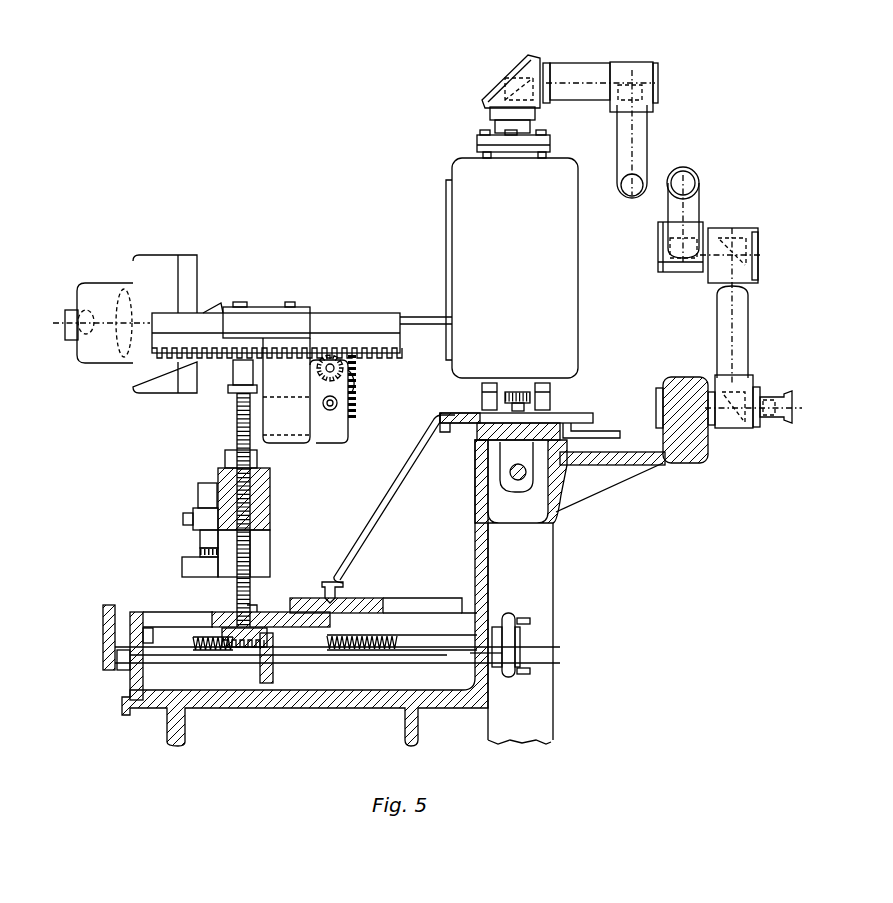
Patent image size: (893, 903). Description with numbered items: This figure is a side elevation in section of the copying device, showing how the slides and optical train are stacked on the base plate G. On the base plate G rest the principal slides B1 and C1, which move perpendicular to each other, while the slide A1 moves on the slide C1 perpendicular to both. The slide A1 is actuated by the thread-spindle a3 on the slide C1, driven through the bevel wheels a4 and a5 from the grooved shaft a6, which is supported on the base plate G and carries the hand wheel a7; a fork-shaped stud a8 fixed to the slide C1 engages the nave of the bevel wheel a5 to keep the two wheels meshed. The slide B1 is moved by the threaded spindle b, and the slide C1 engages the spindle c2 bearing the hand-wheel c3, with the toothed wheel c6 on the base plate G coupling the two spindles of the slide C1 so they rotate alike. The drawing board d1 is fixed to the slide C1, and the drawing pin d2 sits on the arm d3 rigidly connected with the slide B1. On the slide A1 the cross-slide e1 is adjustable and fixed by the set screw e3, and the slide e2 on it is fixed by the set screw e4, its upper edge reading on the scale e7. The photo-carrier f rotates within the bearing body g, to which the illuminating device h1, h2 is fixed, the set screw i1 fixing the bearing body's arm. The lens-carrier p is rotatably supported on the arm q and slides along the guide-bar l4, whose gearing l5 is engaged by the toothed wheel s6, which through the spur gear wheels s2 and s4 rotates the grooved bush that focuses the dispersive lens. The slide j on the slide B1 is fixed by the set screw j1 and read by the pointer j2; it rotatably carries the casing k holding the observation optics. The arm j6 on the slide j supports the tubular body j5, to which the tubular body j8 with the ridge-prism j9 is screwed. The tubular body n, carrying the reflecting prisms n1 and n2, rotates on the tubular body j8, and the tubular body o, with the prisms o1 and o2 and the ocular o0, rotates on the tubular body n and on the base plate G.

The casing k is at (512, 268).
The ridge-prism j9 is at (502, 88).
The tubular body j8 is at (558, 70).
The tubular body j5 is at (500, 126).
The arm j6 is at (550, 143).
The slide j is at (582, 414).
The set screw j1 is at (480, 398).
The pointer j2 is at (600, 432).
The single reflecting prism n1 is at (624, 70).
The tubular body n is at (645, 133).
The single reflecting prism n2 is at (660, 247).
The single reflecting prism o1 is at (728, 238).
The tubular body o is at (746, 320).
The single reflecting prism o2 is at (736, 428).
The ocular o0 is at (775, 418).
The base plate G is at (684, 380).
The slide B1 is at (498, 452).
The spindle b is at (510, 478).
The arm d3 is at (386, 512).
The drawing pin d2 is at (343, 592).
The drawing board d1 is at (378, 598).
The spindle c2 is at (428, 636).
The slide C1 is at (265, 610).
The hand-wheel c3 is at (508, 614).
The toothed wheel c6 is at (104, 630).
The thread-spindle a3 is at (237, 604).
The bevel wheel a4 is at (222, 635).
The bevel wheel a5 is at (262, 675).
The grooved shaft a6 is at (368, 656).
The hand wheel a7 is at (508, 672).
The fork-shaped stud a8 is at (298, 650).
The slide e1 is at (195, 560).
The slide e2 is at (200, 512).
The set screw e3 is at (200, 552).
The set screw e4 is at (183, 520).
The scale e7 is at (200, 540).
The slide A1 is at (262, 498).
The arm q is at (233, 380).
The lens-carrier p is at (285, 375).
The set screw i1 is at (240, 302).
The spur gear wheel s2 is at (348, 370).
The spur gear wheel s4 is at (356, 416).
The toothed wheel s6 is at (352, 388).
The guide-bar l4 is at (392, 313).
The gearing l5 is at (398, 356).
The photo-carrier f is at (212, 308).
The bearing body g is at (184, 262).
The illuminating device h1 is at (120, 292).
The illuminating device h2 is at (78, 312).